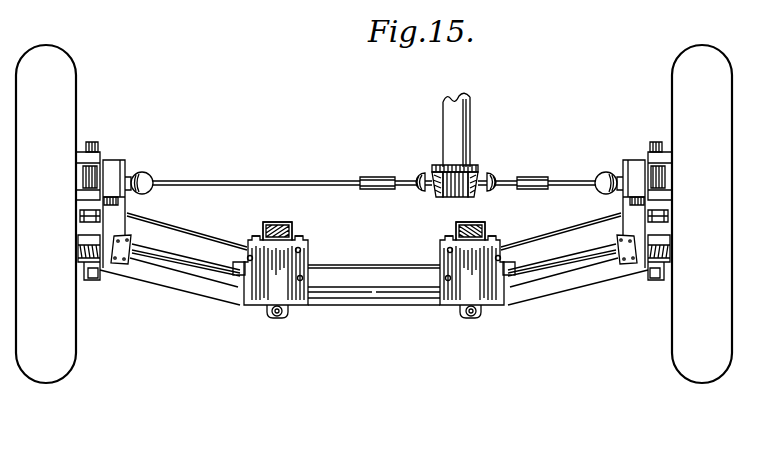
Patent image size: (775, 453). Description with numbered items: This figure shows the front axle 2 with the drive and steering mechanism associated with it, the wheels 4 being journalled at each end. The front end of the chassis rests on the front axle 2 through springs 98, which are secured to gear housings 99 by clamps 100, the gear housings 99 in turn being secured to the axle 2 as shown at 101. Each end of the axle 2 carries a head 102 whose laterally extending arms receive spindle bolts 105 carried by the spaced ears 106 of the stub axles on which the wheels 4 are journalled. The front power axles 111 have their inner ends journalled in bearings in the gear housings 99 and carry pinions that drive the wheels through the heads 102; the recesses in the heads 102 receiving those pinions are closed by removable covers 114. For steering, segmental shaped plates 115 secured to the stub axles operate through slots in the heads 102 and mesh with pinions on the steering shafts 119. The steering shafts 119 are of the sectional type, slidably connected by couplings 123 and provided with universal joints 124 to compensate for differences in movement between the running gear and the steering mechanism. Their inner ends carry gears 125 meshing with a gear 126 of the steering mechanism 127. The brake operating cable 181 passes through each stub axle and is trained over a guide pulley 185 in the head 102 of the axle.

The front axle 2 is at (598, 280).
The wheel 4 is at (72, 342).
The springs 98 is at (263, 227).
The gear housings 99 is at (303, 253).
The clamps 100 is at (290, 227).
The gear housing attachment 101 is at (285, 313).
The heads 102 is at (125, 160).
The spindle bolts 105 is at (93, 283).
The spaced ears 106 is at (100, 153).
The front power axles 111 is at (192, 262).
The removable covers 114 is at (133, 240).
The segmental shaped plates 115 is at (118, 201).
The steering shafts 119 is at (325, 179).
The couplings 123 is at (380, 175).
The universal joints 124 is at (597, 177).
The gears 125 is at (480, 167).
The gear 126 is at (440, 163).
The steering mechanism 127 is at (465, 102).
The operating cable 181 is at (203, 232).
The guide pulley 185 is at (72, 222).